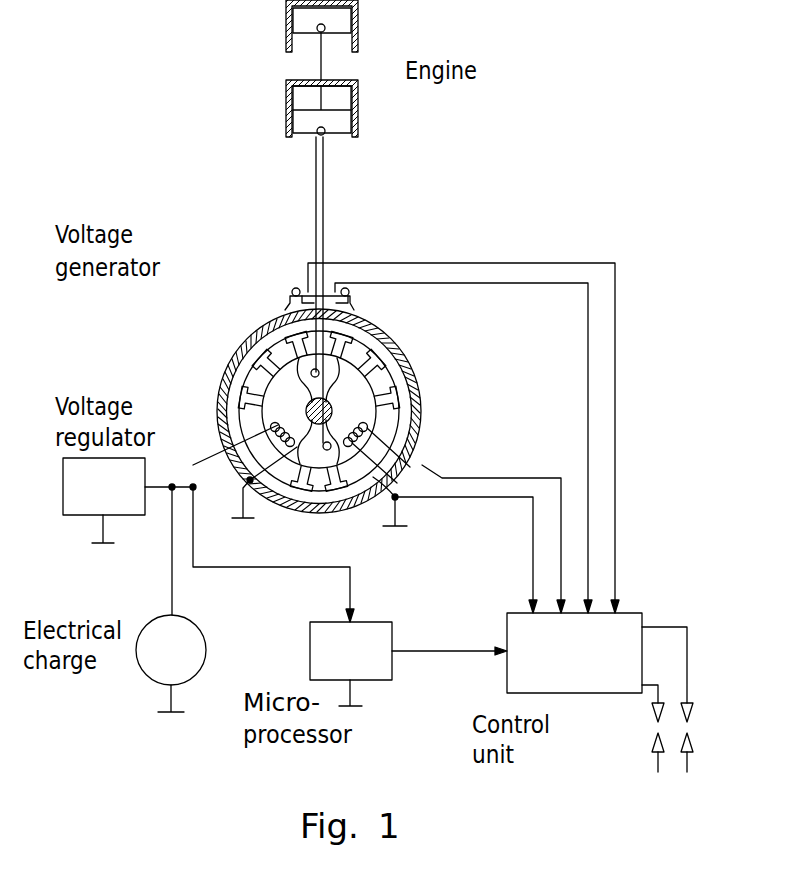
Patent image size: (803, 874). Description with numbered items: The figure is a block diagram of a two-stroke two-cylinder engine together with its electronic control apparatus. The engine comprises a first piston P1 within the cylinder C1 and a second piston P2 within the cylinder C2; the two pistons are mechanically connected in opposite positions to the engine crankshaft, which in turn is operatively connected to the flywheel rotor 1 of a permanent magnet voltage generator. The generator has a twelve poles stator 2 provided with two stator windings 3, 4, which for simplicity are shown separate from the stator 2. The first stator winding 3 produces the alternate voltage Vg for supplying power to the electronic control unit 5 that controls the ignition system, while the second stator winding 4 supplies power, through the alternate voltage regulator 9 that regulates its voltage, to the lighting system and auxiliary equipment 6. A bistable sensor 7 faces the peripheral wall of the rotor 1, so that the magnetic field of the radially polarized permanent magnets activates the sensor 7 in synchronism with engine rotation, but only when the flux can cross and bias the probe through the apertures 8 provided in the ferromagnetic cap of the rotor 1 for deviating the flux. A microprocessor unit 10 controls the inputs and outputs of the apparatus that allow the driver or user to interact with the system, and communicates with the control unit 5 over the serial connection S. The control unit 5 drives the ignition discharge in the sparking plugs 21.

The flywheel rotor 1 is at (246, 312).
The twelve poles stator 2 is at (360, 392).
The first stator winding 3 is at (362, 457).
The second stator winding 4 is at (283, 447).
The electronic control unit 5 is at (574, 653).
The auxiliary equipment 6 is at (171, 599).
The bistable sensor 7 is at (294, 288).
The apertures 8 is at (240, 353).
The alternate voltage regulator 9 is at (129, 500).
The microprocessor unit 10 is at (292, 596).
The sparking plugs 21 is at (632, 741).
The cylinder C1 is at (286, 40).
The cylinder C2 is at (286, 98).
The first piston P1 is at (340, 17).
The second piston P2 is at (340, 128).
The alternate voltage Vg is at (491, 523).
The serial connection S is at (449, 639).